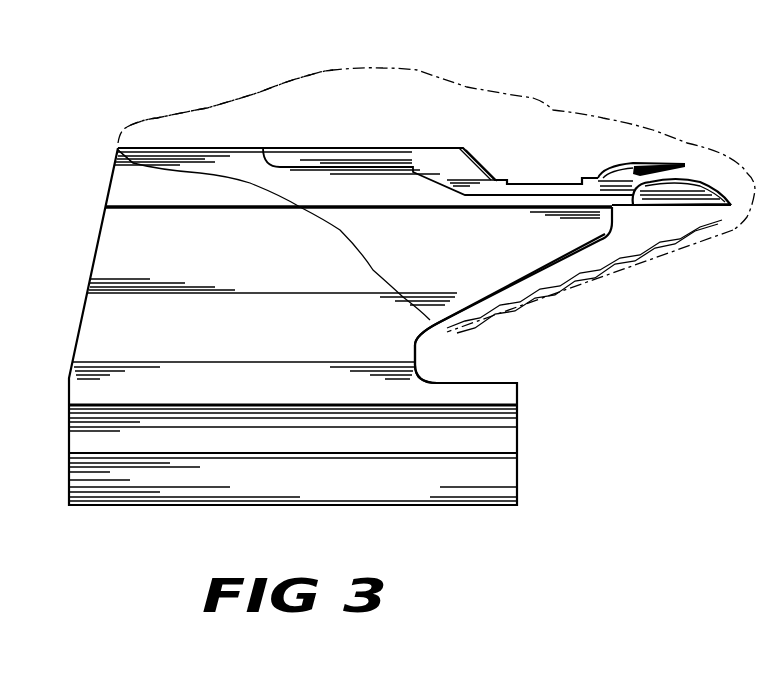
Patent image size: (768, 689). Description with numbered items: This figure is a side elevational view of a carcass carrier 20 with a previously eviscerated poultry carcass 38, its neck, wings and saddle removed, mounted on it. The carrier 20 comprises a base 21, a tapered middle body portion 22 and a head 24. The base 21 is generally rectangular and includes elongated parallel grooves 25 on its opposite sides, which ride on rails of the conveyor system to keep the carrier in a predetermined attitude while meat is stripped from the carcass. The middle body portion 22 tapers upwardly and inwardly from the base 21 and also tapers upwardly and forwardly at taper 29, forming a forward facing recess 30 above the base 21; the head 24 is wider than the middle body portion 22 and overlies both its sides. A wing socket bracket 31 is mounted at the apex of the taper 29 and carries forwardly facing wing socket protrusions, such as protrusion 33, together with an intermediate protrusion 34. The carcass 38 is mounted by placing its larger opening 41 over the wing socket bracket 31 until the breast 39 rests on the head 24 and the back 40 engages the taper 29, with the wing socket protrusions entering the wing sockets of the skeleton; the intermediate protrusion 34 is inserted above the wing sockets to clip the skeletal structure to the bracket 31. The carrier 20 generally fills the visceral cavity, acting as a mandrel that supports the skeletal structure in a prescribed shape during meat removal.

The carcass carrier 20 is at (535, 380).
The base 21 is at (507, 483).
The tapered middle body portion 22 is at (403, 346).
The head 24 is at (367, 147).
The grooves 25 is at (78, 443).
The taper 29 is at (600, 243).
The forward facing recess 30 is at (457, 365).
The wing socket bracket 31 is at (709, 179).
The wing socket protrusion 33 is at (727, 205).
The intermediate protrusion 34 is at (627, 168).
The poultry carcass 38 is at (423, 66).
The breast 39 is at (320, 93).
The back 40 is at (576, 296).
The larger opening 41 is at (356, 258).